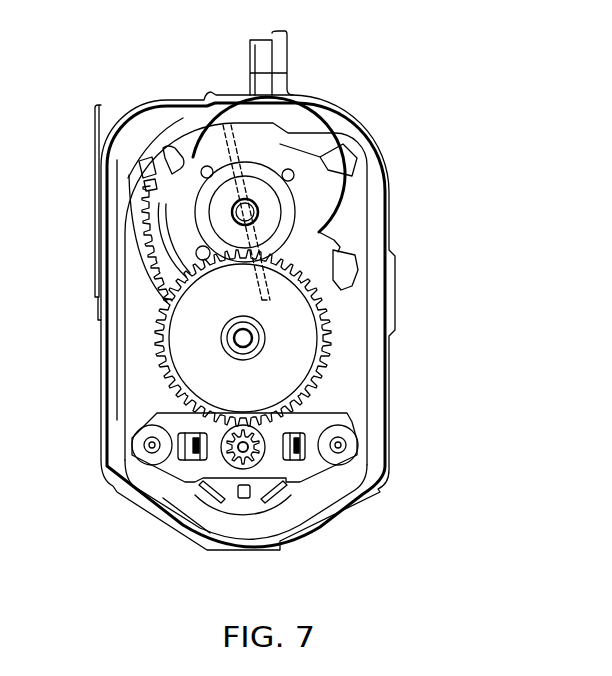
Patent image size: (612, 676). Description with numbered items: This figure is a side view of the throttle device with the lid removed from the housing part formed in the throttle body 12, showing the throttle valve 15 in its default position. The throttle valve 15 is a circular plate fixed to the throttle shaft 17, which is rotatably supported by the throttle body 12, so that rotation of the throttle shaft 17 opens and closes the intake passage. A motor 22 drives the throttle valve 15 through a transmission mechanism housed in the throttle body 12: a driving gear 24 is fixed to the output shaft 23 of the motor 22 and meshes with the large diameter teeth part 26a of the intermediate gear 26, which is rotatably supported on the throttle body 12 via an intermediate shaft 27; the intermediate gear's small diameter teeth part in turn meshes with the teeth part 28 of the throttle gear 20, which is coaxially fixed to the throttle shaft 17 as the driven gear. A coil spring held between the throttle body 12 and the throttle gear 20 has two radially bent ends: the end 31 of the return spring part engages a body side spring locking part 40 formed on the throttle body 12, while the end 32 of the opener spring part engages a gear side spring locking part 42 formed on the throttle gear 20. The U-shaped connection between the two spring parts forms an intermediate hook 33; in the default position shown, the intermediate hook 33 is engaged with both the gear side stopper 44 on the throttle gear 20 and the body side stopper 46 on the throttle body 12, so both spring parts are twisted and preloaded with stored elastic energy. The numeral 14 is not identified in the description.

The throttle body 12 is at (390, 138).
The housing 14 is at (362, 125).
The throttle valve 15 is at (248, 190).
The throttle shaft 17 is at (258, 212).
The throttle gear 20 is at (300, 186).
The motor 22 is at (155, 417).
The output shaft 23 is at (214, 476).
The driving gear 24 is at (272, 468).
The intermediate gear 26 is at (296, 330).
The large diameter teeth part 26a is at (338, 358).
The intermediate shaft 27 is at (232, 340).
The teeth part 28 is at (145, 248).
The end 31 is at (346, 262).
The end 32 is at (147, 189).
The intermediate hook 33 is at (145, 166).
The body side spring locking part 40 is at (342, 249).
The gear side spring locking part 42 is at (142, 199).
The gear side stopper 44 is at (173, 160).
The body side stopper 46 is at (150, 158).